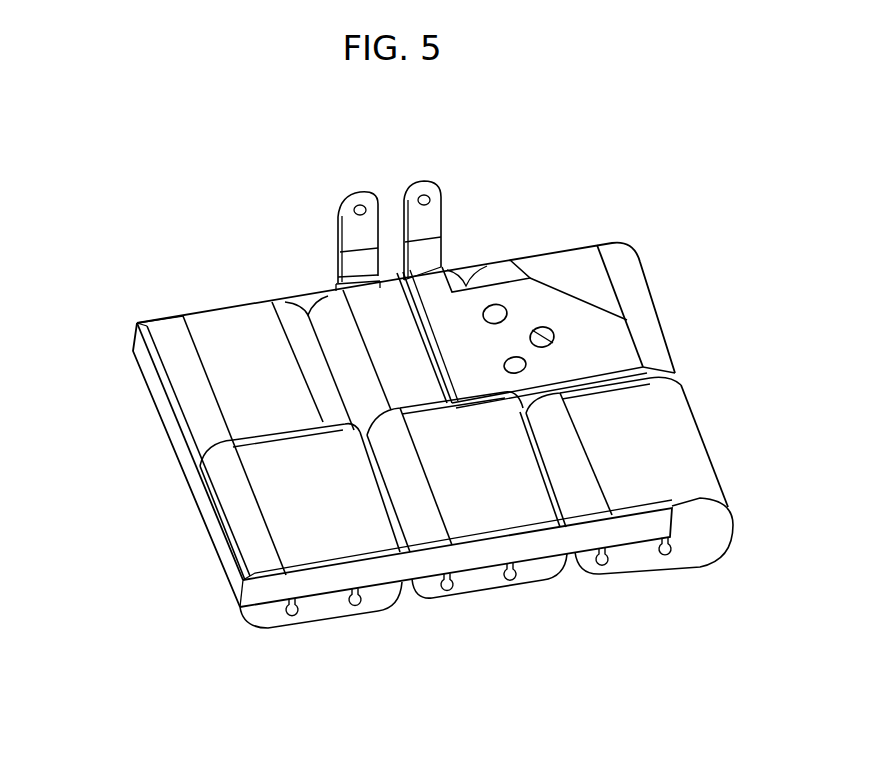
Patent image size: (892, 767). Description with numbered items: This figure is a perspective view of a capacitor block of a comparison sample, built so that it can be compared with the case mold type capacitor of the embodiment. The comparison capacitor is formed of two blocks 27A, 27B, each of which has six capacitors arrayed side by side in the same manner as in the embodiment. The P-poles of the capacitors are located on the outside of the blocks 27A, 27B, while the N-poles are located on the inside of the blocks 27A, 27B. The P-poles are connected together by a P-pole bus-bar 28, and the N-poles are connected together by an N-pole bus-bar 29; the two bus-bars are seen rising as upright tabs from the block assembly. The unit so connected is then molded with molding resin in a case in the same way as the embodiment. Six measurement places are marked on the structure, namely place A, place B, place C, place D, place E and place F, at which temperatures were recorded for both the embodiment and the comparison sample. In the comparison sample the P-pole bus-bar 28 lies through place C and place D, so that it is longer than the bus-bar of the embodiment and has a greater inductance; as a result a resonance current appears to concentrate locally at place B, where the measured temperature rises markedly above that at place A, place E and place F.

The P-pole bus-bar 28 is at (352, 211).
The N-pole bus-bar 29 is at (433, 206).
The block 27A is at (690, 230).
The block 27B is at (741, 360).
The place A is at (637, 236).
The place B is at (332, 273).
The place C is at (152, 416).
The place D is at (206, 552).
The place E is at (502, 602).
The place F is at (700, 418).